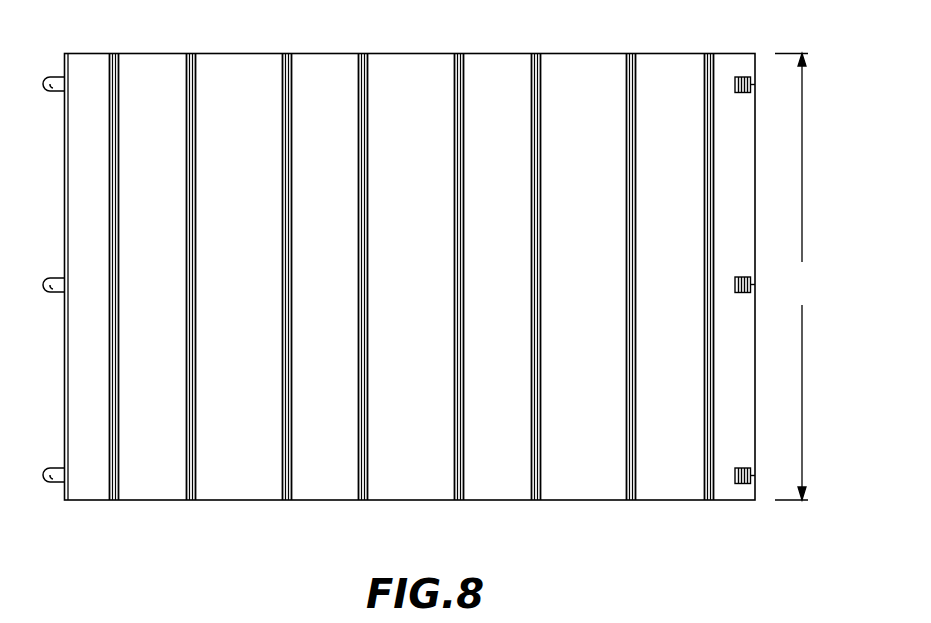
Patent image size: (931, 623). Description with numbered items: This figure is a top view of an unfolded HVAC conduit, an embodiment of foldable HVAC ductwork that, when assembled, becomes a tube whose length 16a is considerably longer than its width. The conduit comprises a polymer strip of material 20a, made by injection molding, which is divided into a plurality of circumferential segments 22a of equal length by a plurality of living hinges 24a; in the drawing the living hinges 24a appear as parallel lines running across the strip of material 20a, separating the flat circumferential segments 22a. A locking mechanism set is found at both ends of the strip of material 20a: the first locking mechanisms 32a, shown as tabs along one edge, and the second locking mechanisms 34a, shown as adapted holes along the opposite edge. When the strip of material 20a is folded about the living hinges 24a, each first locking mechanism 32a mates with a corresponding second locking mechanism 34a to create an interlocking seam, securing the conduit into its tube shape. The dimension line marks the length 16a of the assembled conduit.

The strip of material 20a is at (87, 173).
The circumferential segments 22a is at (741, 28).
The living hinges 24a is at (115, 500).
The first locking mechanism 32a is at (53, 92).
The second locking mechanism 34a is at (751, 84).
The length 16a is at (797, 277).